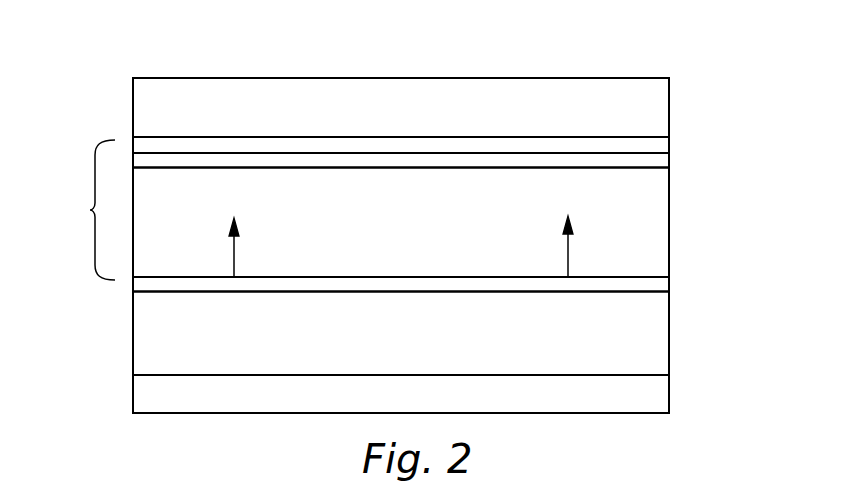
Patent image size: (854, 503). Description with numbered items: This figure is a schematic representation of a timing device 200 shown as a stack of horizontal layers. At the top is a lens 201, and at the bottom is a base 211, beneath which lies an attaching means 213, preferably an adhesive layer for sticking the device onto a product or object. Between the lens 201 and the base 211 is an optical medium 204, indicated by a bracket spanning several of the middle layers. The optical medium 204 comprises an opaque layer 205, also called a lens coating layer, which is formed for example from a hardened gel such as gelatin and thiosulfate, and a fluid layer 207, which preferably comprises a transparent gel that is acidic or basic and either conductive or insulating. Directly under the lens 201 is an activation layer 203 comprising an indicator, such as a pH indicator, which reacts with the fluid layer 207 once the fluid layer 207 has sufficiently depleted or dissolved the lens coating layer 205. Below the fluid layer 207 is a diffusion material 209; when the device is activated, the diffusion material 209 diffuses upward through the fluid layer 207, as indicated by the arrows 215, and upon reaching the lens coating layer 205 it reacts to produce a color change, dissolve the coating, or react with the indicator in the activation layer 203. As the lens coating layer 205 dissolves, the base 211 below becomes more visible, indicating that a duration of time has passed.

The timing device 200 is at (110, 63).
The lens 201 is at (669, 90).
The activation layer 203 is at (669, 140).
The optical medium 204 is at (78, 210).
The opaque layer 205 is at (669, 157).
The fluid layer 207 is at (669, 225).
The diffusion material 209 is at (669, 282).
The base 211 is at (669, 325).
The attaching means 213 is at (669, 393).
The arrows 215 is at (234, 257).